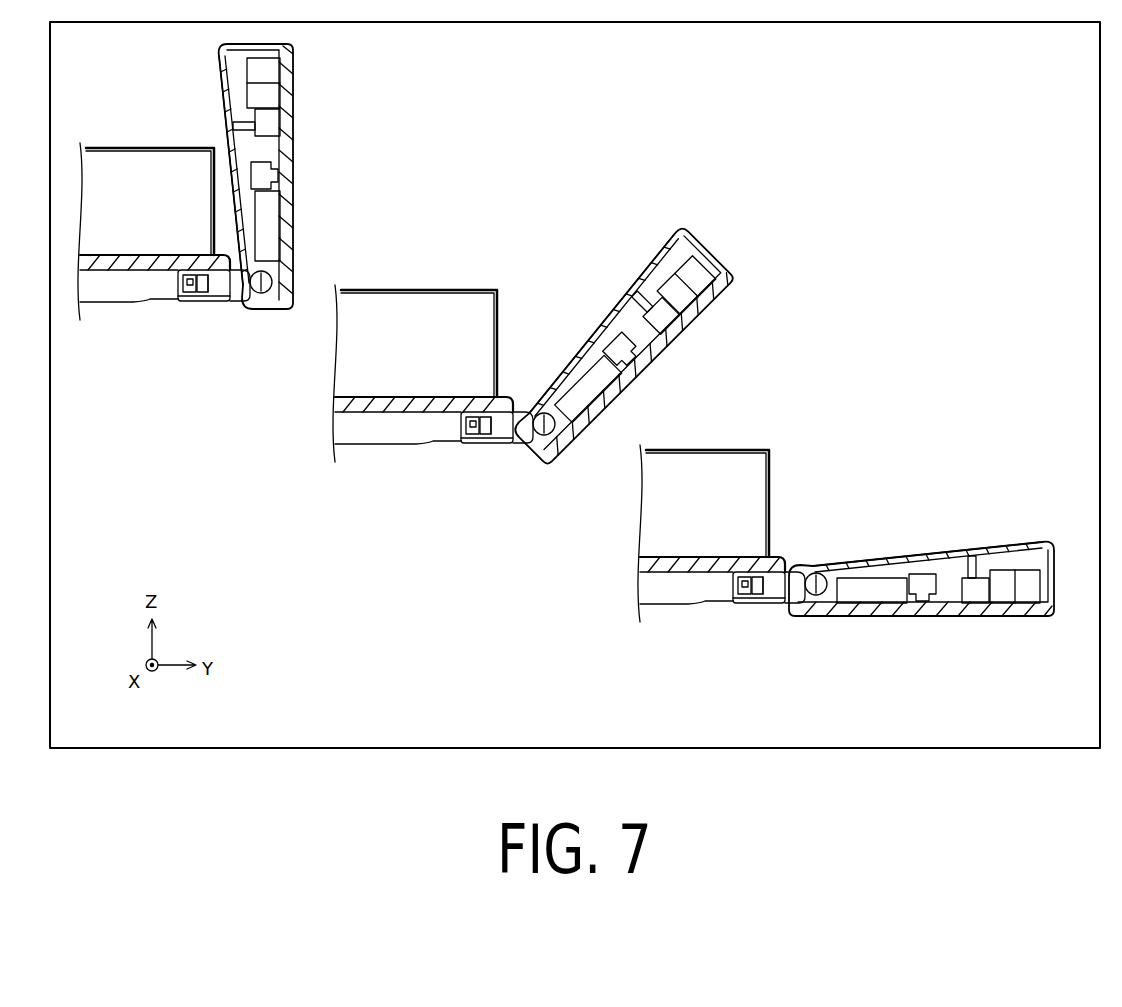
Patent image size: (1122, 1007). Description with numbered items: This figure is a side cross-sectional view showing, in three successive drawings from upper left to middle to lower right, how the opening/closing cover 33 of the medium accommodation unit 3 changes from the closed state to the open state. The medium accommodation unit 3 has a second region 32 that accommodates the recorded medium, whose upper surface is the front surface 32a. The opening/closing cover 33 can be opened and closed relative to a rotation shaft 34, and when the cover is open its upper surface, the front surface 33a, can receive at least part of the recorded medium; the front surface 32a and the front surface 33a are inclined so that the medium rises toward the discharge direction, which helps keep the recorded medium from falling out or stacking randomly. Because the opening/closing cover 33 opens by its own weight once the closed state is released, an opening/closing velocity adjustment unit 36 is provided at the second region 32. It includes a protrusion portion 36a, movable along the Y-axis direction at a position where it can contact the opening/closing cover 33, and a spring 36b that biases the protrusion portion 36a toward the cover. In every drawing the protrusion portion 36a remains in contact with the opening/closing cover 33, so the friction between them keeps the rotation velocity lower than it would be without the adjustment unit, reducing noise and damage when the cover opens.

The medium accommodation unit 3 is at (567, 371).
The second region 32 is at (152, 285).
The front surface 32a is at (121, 255).
The opening/closing cover 33 is at (287, 73).
The front surface 33a is at (217, 90).
The rotation shaft 34 is at (278, 310).
The opening/closing velocity adjustment unit 36 is at (485, 484).
The protrusion portion 36a is at (233, 304).
The spring 36b is at (188, 303).